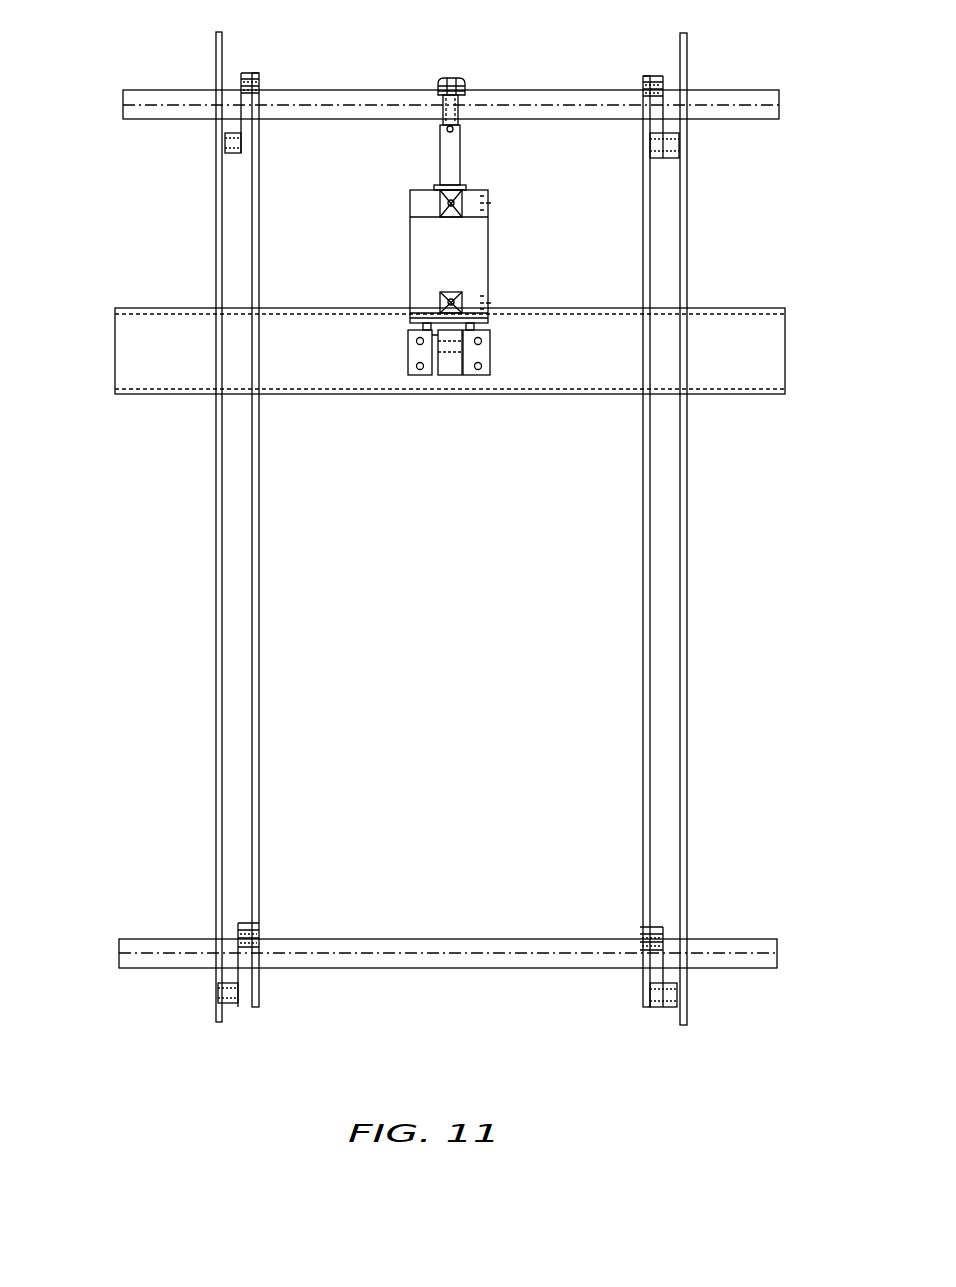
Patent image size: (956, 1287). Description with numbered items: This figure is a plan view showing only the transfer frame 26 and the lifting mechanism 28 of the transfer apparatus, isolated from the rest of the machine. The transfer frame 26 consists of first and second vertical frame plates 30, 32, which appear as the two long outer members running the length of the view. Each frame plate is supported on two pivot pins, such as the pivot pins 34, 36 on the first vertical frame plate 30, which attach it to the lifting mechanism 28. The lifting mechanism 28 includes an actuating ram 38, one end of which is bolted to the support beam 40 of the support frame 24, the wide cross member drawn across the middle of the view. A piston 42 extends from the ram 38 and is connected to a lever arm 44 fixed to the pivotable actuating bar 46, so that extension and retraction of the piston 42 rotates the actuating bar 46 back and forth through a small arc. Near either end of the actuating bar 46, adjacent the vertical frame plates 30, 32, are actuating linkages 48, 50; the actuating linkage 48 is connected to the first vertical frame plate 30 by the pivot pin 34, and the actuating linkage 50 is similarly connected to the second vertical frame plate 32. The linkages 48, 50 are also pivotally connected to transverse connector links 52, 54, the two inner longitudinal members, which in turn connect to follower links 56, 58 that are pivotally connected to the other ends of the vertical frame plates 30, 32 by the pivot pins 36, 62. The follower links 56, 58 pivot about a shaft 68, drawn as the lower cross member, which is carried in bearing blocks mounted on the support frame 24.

The support frame 24 is at (474, 319).
The support beam 40 is at (747, 308).
The transfer frame 26 is at (434, 528).
The first vertical frame plate 30 is at (216, 519).
The second vertical frame plate 32 is at (687, 530).
The lifting mechanism 28 is at (491, 282).
The actuating ram 38 is at (482, 240).
The pivot pin 34 is at (225, 143).
The pivot pin 36 is at (218, 990).
The piston 42 is at (457, 145).
The lever arm 44 is at (450, 78).
The actuating bar 46 is at (573, 95).
The actuating linkage 48 is at (241, 125).
The actuating linkage 50 is at (657, 127).
The transverse connector link 52 is at (259, 566).
The transverse connector link 54 is at (643, 531).
The follower link 56 is at (245, 975).
The follower link 58 is at (652, 977).
The pivot pin 62 is at (667, 1000).
The shaft 68 is at (487, 945).